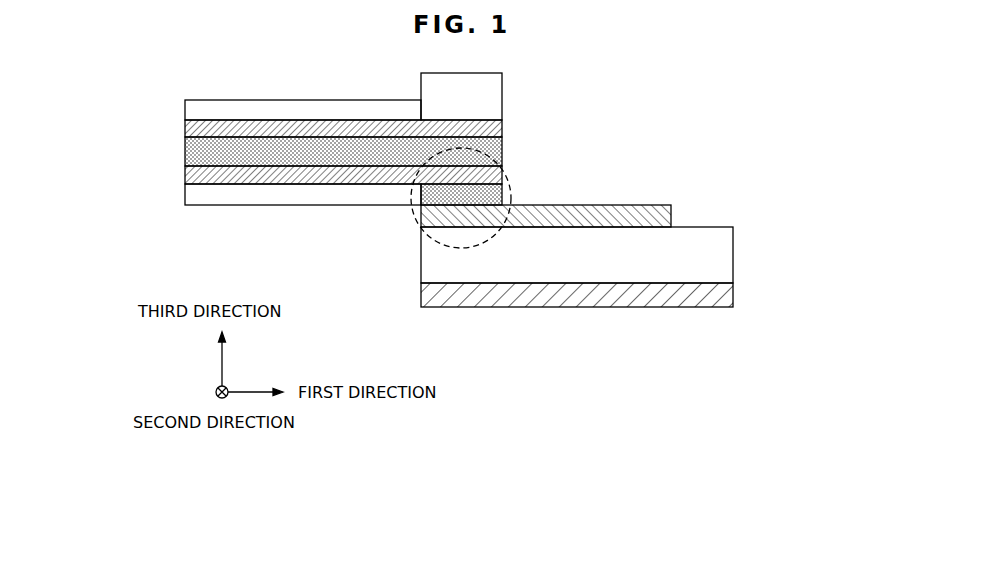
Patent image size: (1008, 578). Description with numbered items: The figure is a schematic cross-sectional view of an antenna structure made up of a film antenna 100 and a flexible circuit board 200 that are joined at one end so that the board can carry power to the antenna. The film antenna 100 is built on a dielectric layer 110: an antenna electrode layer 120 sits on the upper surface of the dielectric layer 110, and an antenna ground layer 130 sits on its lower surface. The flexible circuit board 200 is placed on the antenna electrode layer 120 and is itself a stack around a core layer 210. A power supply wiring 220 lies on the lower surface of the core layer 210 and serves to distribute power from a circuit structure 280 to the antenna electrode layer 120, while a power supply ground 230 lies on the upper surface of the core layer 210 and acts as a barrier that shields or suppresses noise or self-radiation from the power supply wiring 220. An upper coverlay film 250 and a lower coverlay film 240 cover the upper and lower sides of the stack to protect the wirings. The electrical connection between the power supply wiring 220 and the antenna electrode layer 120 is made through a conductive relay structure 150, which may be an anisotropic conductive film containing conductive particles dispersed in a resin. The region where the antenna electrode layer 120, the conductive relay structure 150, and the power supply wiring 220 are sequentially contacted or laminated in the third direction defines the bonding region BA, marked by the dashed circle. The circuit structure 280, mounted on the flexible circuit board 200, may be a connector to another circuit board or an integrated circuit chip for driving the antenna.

The film antenna 100 is at (647, 255).
The dielectric layer 110 is at (733, 252).
The antenna electrode layer 120 is at (671, 208).
The antenna ground layer 130 is at (733, 294).
The conductive relay structure 150 is at (492, 193).
The flexible circuit board 200 is at (278, 154).
The core layer 210 is at (186, 152).
The power supply wiring 220 is at (186, 173).
The power supply ground 230 is at (186, 129).
The lower coverlay film 240 is at (266, 197).
The upper coverlay film 250 is at (186, 108).
The circuit structure 280 is at (502, 90).
The bonding region BA is at (412, 212).